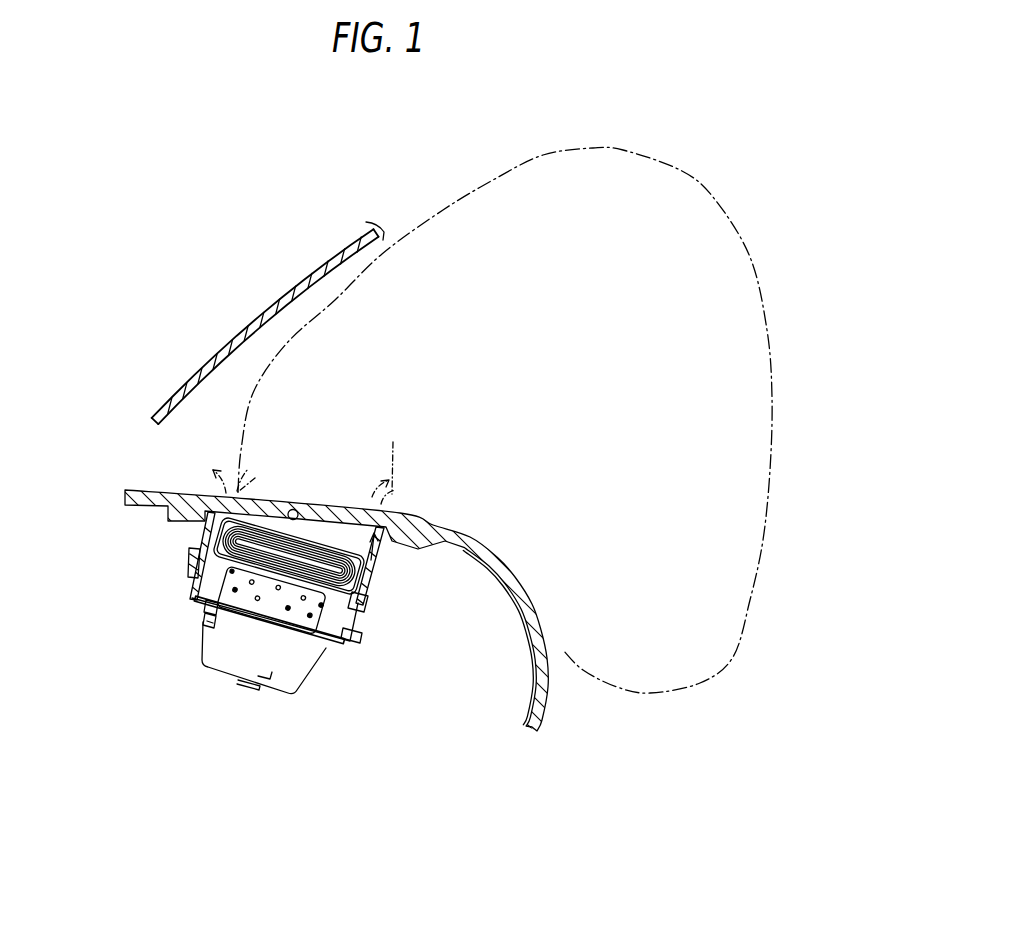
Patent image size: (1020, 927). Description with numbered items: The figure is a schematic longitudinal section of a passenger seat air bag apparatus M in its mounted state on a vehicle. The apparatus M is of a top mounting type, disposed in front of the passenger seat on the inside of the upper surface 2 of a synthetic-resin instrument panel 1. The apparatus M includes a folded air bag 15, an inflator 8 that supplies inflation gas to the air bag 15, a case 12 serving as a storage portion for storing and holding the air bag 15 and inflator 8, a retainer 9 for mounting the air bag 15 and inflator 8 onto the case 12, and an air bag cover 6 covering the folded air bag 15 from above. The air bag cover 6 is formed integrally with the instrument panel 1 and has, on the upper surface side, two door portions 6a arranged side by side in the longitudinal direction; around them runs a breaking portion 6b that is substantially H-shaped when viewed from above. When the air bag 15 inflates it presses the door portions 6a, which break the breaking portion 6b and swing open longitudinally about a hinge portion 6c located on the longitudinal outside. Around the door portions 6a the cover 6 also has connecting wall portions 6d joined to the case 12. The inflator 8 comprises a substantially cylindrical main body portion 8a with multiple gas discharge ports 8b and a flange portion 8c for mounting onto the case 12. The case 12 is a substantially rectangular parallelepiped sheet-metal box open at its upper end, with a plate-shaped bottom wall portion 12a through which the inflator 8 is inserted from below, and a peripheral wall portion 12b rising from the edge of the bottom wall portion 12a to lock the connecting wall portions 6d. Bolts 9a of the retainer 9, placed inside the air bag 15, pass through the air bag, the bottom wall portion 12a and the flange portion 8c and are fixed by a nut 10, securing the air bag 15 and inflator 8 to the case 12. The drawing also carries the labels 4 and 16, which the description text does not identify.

The instrument panel 1 is at (422, 636).
The upper surface 2 is at (485, 542).
The windshield 4 is at (264, 312).
The air bag cover 6 is at (258, 603).
The door portions 6a is at (255, 497).
The breaking portion 6b is at (293, 508).
The hinge portion 6c is at (372, 535).
The connecting wall portions 6d is at (188, 557).
The inflator 8 is at (265, 683).
The main body portion 8a is at (294, 680).
The gas discharge ports 8b is at (287, 610).
The flange portion 8c is at (292, 640).
The retainer 9 is at (296, 661).
The bolts 9a is at (212, 618).
The nut 10 is at (207, 608).
The case 12 is at (311, 684).
The bottom wall portion 12a is at (330, 645).
The peripheral wall portion 12b is at (353, 633).
The air bag 15 is at (321, 536).
The inflated airbag 16 is at (693, 700).
The passenger seat air bag apparatus M is at (258, 613).